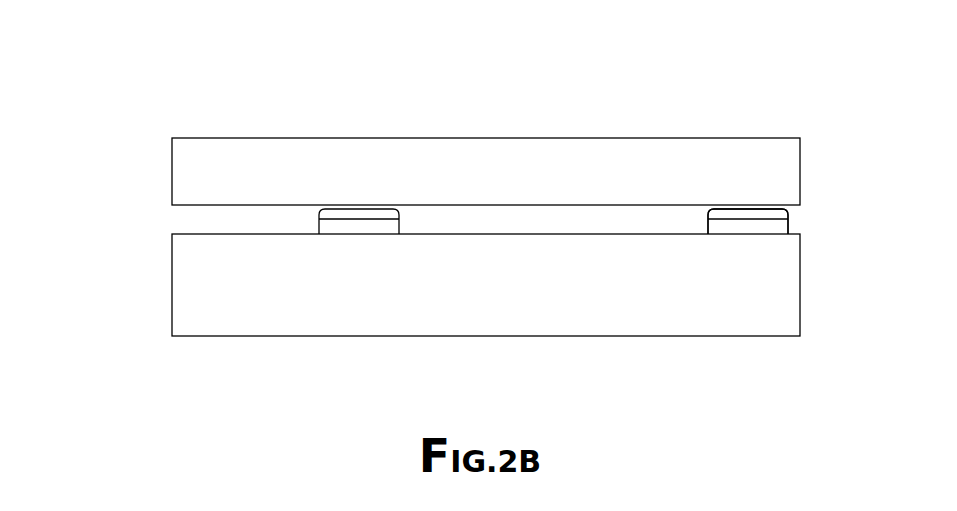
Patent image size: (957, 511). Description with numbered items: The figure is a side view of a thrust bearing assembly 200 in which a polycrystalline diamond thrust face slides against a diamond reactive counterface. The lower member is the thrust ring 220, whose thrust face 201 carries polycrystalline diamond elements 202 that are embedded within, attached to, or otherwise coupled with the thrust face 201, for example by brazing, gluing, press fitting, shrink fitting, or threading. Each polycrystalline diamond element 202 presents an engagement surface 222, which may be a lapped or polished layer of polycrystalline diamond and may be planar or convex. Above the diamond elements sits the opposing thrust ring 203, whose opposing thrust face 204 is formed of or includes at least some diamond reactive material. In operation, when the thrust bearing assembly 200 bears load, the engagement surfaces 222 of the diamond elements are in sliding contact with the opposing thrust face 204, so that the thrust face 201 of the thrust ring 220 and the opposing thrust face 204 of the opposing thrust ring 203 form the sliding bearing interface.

The thrust bearing assembly 200 is at (152, 178).
The thrust face 201 is at (222, 231).
The polycrystalline diamond elements 202 is at (363, 237).
The opposing thrust ring 203 is at (572, 137).
The opposing thrust face 204 is at (292, 210).
The thrust ring 220 is at (170, 272).
The engagement surface 222 is at (757, 208).